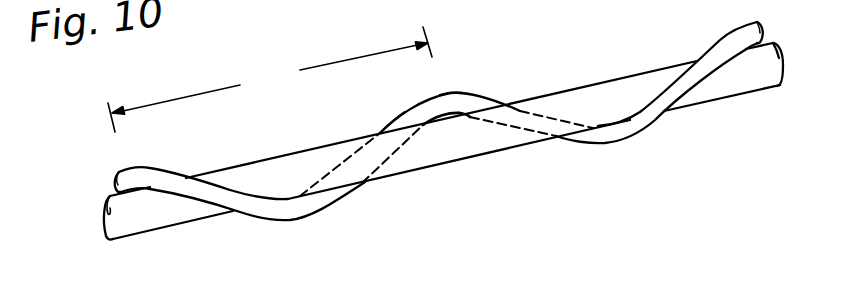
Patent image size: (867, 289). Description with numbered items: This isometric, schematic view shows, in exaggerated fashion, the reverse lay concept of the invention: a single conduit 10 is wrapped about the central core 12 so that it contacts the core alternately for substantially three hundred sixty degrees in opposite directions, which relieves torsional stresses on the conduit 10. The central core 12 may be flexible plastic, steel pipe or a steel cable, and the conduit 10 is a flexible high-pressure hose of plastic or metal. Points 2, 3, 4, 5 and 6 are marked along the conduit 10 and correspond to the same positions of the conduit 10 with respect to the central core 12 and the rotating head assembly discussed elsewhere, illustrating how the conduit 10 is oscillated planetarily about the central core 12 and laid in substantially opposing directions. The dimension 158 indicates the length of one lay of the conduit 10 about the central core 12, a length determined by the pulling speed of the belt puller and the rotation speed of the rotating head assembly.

The first end of strip 2 is at (518, 0).
The end of twisted strip 3 is at (129, 166).
The point on twisted strip 4 is at (403, 103).
The crest of twisted strip 5 is at (451, 79).
The second end of twisted strip 6 is at (748, 21).
The conduit 10 is at (724, 46).
The central core 12 is at (580, 97).
The length of a lay 158 is at (270, 79).